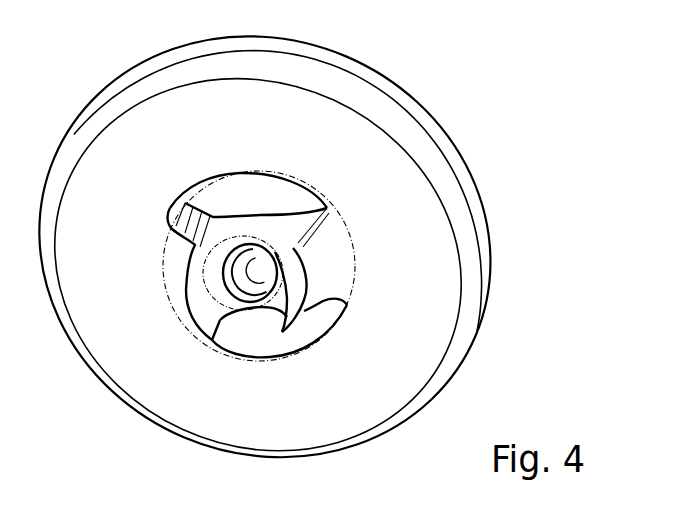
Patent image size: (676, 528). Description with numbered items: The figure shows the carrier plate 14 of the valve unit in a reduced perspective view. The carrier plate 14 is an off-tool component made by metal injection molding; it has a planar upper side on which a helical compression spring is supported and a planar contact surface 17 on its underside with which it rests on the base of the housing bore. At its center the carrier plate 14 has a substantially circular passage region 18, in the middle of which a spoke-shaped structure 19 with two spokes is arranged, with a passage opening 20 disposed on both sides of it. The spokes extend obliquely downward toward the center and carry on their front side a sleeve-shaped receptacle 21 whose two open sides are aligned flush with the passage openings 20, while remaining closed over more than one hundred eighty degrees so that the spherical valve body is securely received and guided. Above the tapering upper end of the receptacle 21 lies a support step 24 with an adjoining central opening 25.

The carrier plate 14 is at (480, 116).
The contact surface 17 is at (398, 270).
The passage region 18 is at (305, 225).
The spoke-shaped structure 19 is at (344, 247).
The passage opening 20 is at (234, 205).
The sleeve-shaped receptacle 21 is at (314, 313).
The support step 24 is at (251, 284).
The central opening 25 is at (257, 262).